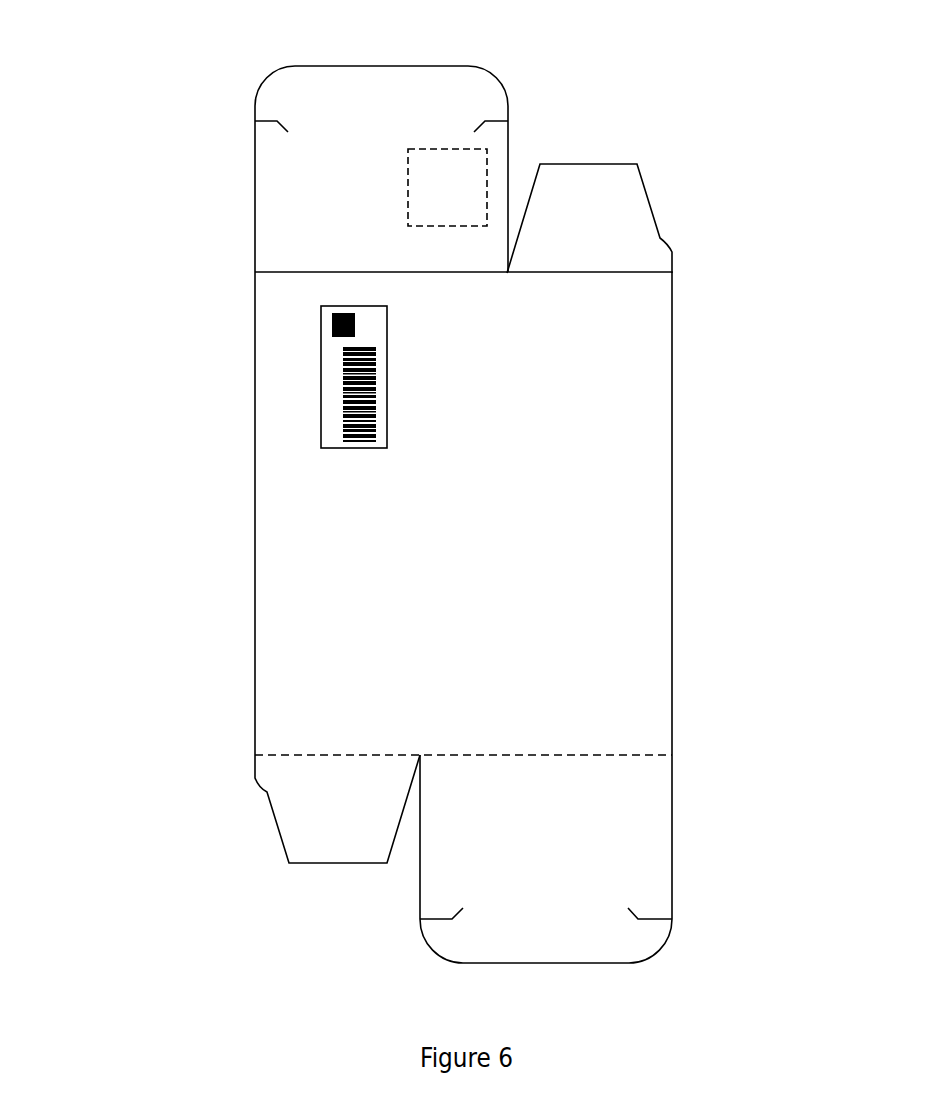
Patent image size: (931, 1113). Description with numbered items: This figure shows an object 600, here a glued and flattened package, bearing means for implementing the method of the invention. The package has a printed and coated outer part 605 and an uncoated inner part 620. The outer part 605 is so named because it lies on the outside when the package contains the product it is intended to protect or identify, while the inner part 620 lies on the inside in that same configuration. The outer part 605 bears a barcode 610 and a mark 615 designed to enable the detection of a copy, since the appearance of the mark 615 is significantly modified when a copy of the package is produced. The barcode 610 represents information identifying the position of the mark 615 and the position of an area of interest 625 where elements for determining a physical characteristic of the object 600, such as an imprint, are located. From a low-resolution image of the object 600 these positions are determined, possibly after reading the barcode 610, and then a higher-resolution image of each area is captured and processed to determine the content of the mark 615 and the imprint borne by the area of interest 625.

The object 600 is at (201, 713).
The outer part 605 is at (657, 634).
The barcode 610 is at (347, 415).
The mark 615 is at (333, 328).
The inner part 620 is at (463, 87).
The area of interest 625 is at (463, 174).